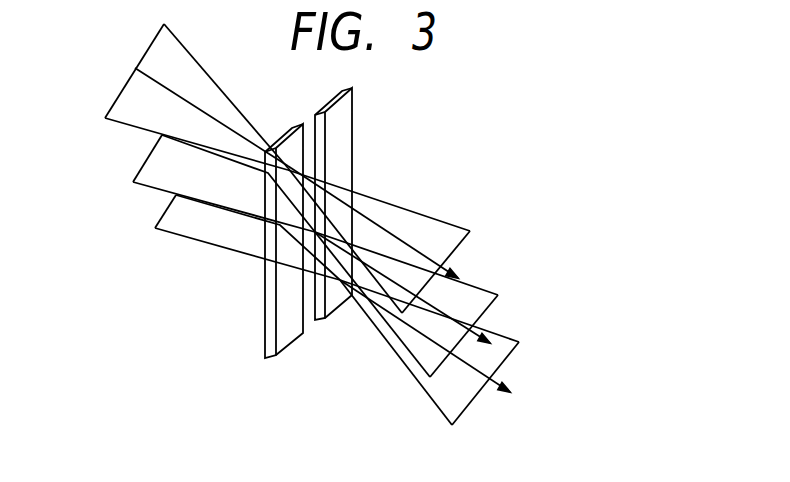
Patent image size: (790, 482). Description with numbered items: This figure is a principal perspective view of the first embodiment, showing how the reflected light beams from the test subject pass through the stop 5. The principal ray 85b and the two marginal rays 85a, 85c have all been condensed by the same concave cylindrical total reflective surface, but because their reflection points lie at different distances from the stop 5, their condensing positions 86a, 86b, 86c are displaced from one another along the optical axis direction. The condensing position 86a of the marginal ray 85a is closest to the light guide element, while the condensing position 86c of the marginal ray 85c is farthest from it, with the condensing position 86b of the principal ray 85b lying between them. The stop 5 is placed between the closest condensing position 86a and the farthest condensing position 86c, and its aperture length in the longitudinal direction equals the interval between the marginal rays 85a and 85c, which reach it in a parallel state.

The stop 5 is at (305, 146).
The condensing position 86a is at (268, 191).
The condensing position 86b is at (267, 260).
The condensing position 86c is at (272, 317).
The marginal ray 85a is at (460, 270).
The principal ray 85b is at (492, 334).
The marginal ray 85c is at (512, 384).